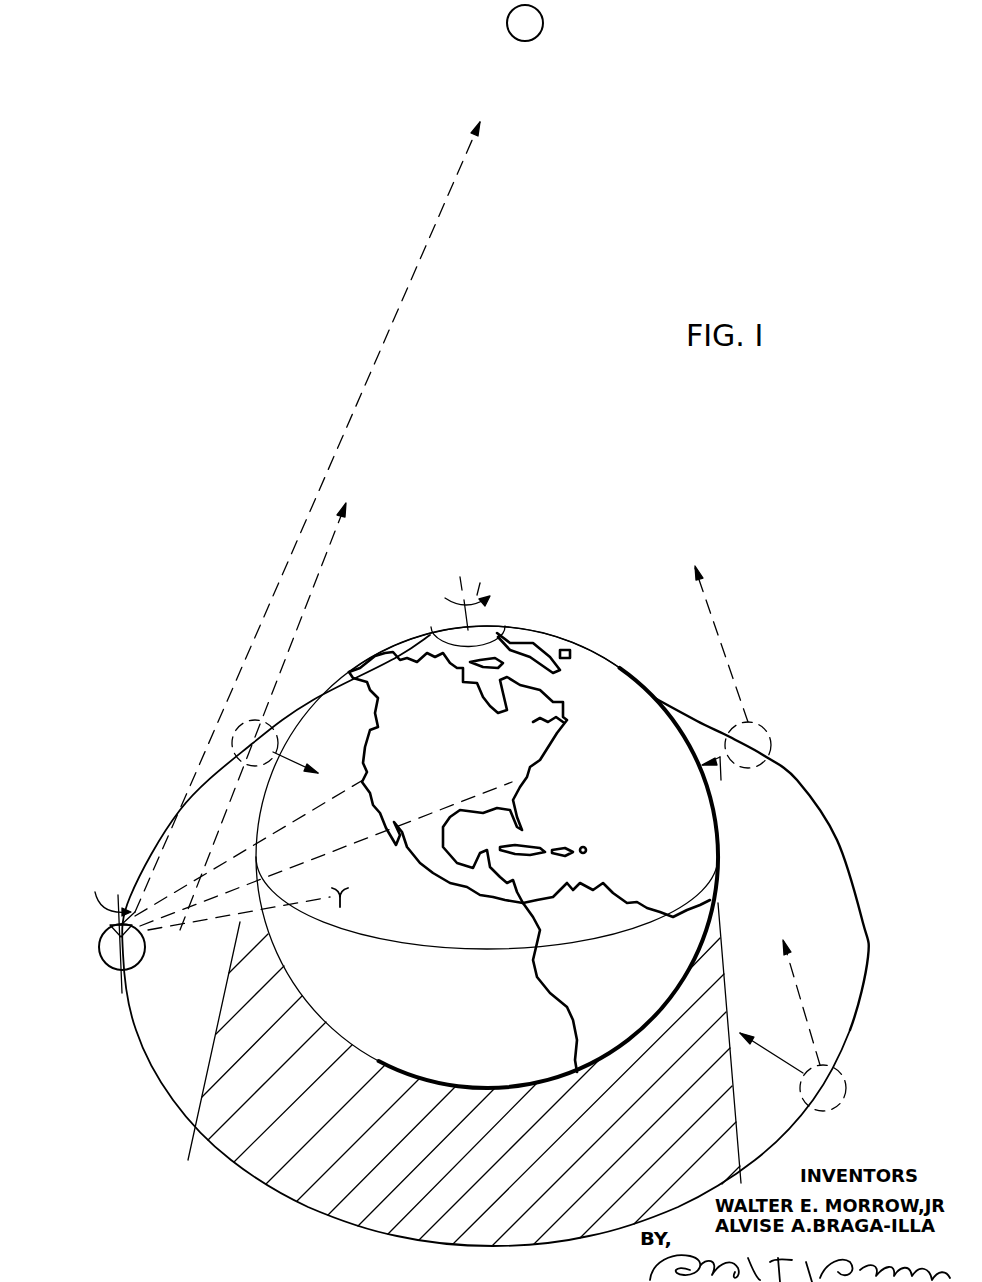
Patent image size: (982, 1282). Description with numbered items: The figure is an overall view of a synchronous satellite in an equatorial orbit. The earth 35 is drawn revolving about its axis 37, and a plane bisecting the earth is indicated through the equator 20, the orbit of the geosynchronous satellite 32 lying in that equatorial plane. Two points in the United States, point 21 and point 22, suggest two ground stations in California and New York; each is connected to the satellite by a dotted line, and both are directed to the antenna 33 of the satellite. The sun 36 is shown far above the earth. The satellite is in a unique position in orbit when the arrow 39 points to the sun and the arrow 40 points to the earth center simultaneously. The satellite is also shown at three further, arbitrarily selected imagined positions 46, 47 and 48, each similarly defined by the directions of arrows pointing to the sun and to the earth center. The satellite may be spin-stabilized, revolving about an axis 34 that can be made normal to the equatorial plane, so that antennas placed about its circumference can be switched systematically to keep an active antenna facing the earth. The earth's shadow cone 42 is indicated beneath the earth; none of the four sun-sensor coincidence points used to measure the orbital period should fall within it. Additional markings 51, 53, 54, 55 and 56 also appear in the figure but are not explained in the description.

The equator 20 is at (716, 869).
The point in the U.S. 21 is at (527, 776).
The point in the U.S. 22 is at (373, 777).
The geosynchronous satellite 32 is at (145, 962).
The antenna 33 is at (116, 920).
The axis 34 is at (103, 892).
The earth 35 is at (628, 668).
The sun 36 is at (543, 23).
The earth axis 37 is at (468, 601).
The arrow pointing to the sun 39 is at (400, 300).
The arrow pointing to the earth center 40 is at (262, 908).
The earth's shadow cone 42 is at (723, 952).
The imagined satellite position 46 is at (848, 1082).
The imagined satellite position 47 is at (770, 731).
The imagined satellite position 48 is at (250, 720).
The antenna pointing direction 51 is at (722, 660).
The antenna pointing direction 53 is at (762, 1048).
The spin axis direction 54 is at (795, 977).
The antenna pointing direction 55 is at (305, 757).
The spin axis direction 56 is at (318, 578).